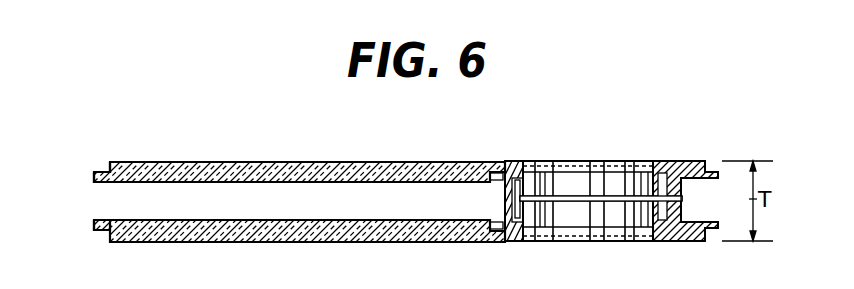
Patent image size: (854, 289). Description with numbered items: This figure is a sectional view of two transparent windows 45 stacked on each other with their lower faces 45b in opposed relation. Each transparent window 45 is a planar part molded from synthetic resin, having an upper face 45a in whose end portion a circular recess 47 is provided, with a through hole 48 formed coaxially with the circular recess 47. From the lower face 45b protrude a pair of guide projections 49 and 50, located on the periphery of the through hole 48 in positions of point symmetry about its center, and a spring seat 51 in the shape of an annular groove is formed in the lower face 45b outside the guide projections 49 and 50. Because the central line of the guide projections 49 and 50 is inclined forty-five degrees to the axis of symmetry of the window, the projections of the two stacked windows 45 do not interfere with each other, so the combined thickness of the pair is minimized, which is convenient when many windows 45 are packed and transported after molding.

The transparent window 45 is at (255, 174).
The upper face 45a is at (174, 162).
The lower face 45b is at (319, 186).
The circular recess 47 is at (658, 161).
The through hole 48 is at (653, 188).
The guide projection 49 is at (679, 198).
The guide projection 50 is at (513, 199).
The spring seat 51 is at (495, 172).